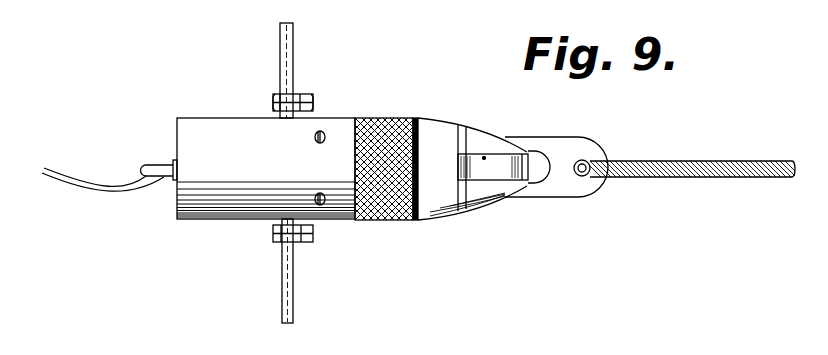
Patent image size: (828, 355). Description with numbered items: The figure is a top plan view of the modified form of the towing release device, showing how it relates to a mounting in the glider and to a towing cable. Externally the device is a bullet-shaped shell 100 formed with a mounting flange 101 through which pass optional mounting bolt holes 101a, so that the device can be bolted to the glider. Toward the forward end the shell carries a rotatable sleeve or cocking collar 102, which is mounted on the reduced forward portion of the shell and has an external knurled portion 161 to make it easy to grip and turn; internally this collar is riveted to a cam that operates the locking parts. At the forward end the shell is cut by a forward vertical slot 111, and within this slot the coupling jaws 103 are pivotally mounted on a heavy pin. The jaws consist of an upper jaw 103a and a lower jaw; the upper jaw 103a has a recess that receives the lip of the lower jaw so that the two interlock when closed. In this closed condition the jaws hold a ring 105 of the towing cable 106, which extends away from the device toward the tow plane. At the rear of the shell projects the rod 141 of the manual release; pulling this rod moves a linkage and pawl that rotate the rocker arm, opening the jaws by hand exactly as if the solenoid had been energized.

The shell 100 is at (226, 197).
The mounting flange 101 is at (302, 93).
The mounting bolt holes 101a is at (323, 132).
The cocking collar 102 is at (388, 120).
The knurled portion 161 is at (390, 222).
The coupling jaws 103 is at (504, 151).
The upper jaw 103a is at (505, 172).
The forward vertical slot 111 is at (486, 156).
The ring 105 is at (583, 146).
The towing cable 106 is at (672, 174).
The rod 141 is at (147, 164).